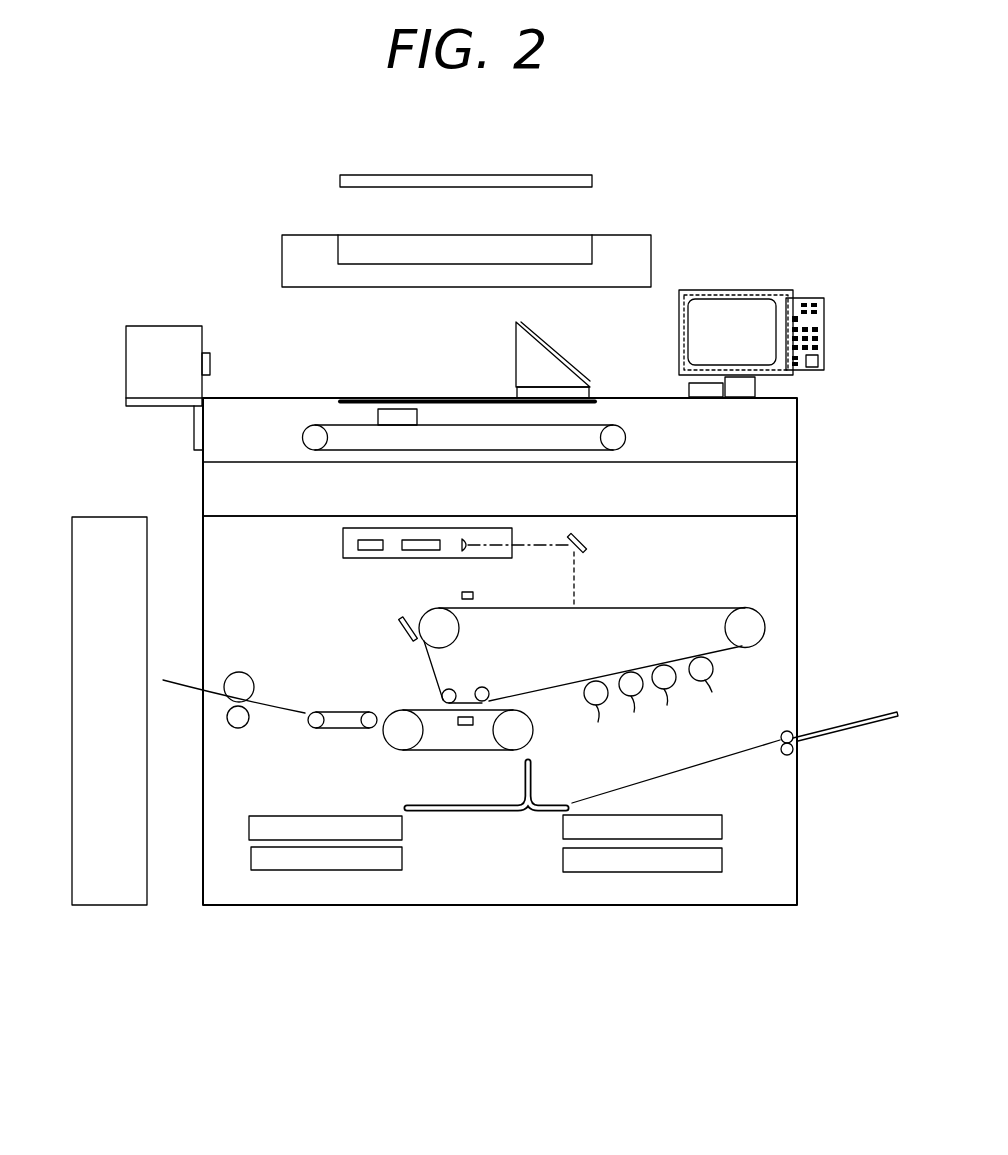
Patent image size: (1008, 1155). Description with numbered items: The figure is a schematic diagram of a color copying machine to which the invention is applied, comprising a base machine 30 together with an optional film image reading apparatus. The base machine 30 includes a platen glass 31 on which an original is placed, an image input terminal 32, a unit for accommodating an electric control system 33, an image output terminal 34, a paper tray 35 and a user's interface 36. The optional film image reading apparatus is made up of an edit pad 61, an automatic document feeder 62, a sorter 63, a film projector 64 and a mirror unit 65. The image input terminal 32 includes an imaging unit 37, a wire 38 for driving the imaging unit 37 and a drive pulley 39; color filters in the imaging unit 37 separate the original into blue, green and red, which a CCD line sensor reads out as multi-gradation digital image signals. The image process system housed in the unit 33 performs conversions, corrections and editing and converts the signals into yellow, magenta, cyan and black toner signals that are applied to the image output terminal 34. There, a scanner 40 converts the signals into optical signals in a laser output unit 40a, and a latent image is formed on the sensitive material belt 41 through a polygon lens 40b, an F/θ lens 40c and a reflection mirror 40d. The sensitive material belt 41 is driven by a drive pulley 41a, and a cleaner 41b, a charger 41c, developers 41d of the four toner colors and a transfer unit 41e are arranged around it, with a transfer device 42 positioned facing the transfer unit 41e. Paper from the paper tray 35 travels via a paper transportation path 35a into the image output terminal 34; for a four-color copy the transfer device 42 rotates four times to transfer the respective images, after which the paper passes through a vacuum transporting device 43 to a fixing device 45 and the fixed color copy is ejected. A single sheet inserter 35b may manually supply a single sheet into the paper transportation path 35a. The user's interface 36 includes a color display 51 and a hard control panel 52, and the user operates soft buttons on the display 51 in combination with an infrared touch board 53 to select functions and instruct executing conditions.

The base machine 30 is at (333, 910).
The platen glass 31 is at (440, 398).
The image input terminal 32 is at (765, 432).
The unit for accommodating an electric control system 33 is at (750, 496).
The image output terminal 34 is at (725, 592).
The paper tray 35 is at (573, 807).
The paper transportation path 35a is at (533, 780).
The single sheet inserter 35b is at (848, 728).
The user's interface 36 is at (779, 302).
The imaging unit 37 is at (396, 409).
The wire 38 is at (333, 425).
The drive pulley 39 is at (613, 430).
The scanner 40 is at (456, 567).
The laser output unit 40a is at (365, 552).
The polygon lens 40b is at (405, 552).
The F/θ lens 40c is at (466, 548).
The reflection mirror 40d is at (586, 540).
The sensitive material belt 41 is at (547, 667).
The drive pulley 41a is at (452, 634).
The cleaner 41b is at (400, 626).
The charger 41c is at (474, 594).
The developers 41d is at (720, 717).
The transfer unit 41e is at (463, 727).
The transfer device 42 is at (445, 756).
The vacuum transporting device 43 is at (330, 732).
The fixing device 45 is at (238, 663).
The color display 51 is at (757, 312).
The hard control panel 52 is at (818, 320).
The infrared touch board 53 is at (693, 290).
The edit pad 61 is at (567, 175).
The automatic document feeder 62 is at (633, 235).
The sorter 63 is at (88, 795).
The film projector 64 is at (181, 326).
The mirror unit 65 is at (540, 360).